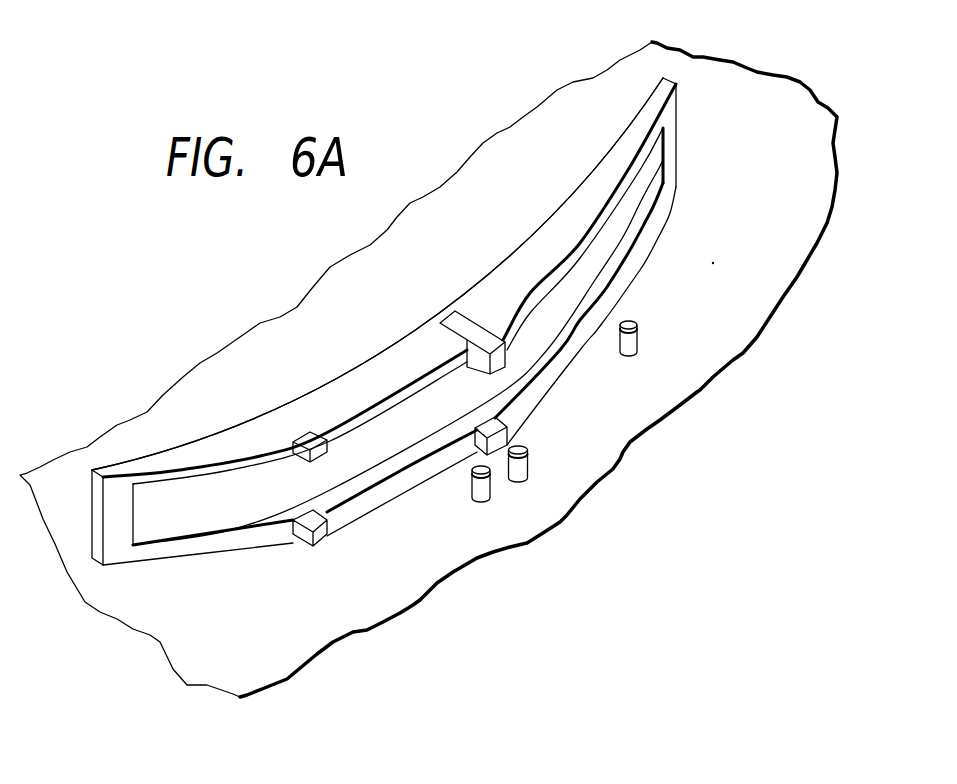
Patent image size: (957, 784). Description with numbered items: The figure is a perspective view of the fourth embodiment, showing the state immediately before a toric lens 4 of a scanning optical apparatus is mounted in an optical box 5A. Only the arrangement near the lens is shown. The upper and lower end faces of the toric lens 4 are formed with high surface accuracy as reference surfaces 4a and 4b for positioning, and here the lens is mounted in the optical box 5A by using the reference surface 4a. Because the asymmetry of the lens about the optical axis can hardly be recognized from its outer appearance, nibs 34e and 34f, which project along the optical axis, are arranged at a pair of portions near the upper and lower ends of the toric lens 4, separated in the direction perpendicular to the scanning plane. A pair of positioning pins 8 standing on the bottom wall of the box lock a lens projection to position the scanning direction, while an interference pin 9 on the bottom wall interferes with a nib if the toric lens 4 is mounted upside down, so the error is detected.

The toric lens 4 is at (585, 128).
The reference surface 4a is at (243, 555).
The reference surface 4b is at (423, 337).
The nib (projection) 34e is at (305, 440).
The nib (projection) 34f is at (316, 548).
The positioning pins 8 is at (518, 481).
The interference pin 9 is at (642, 338).
The optical box 5A is at (104, 624).